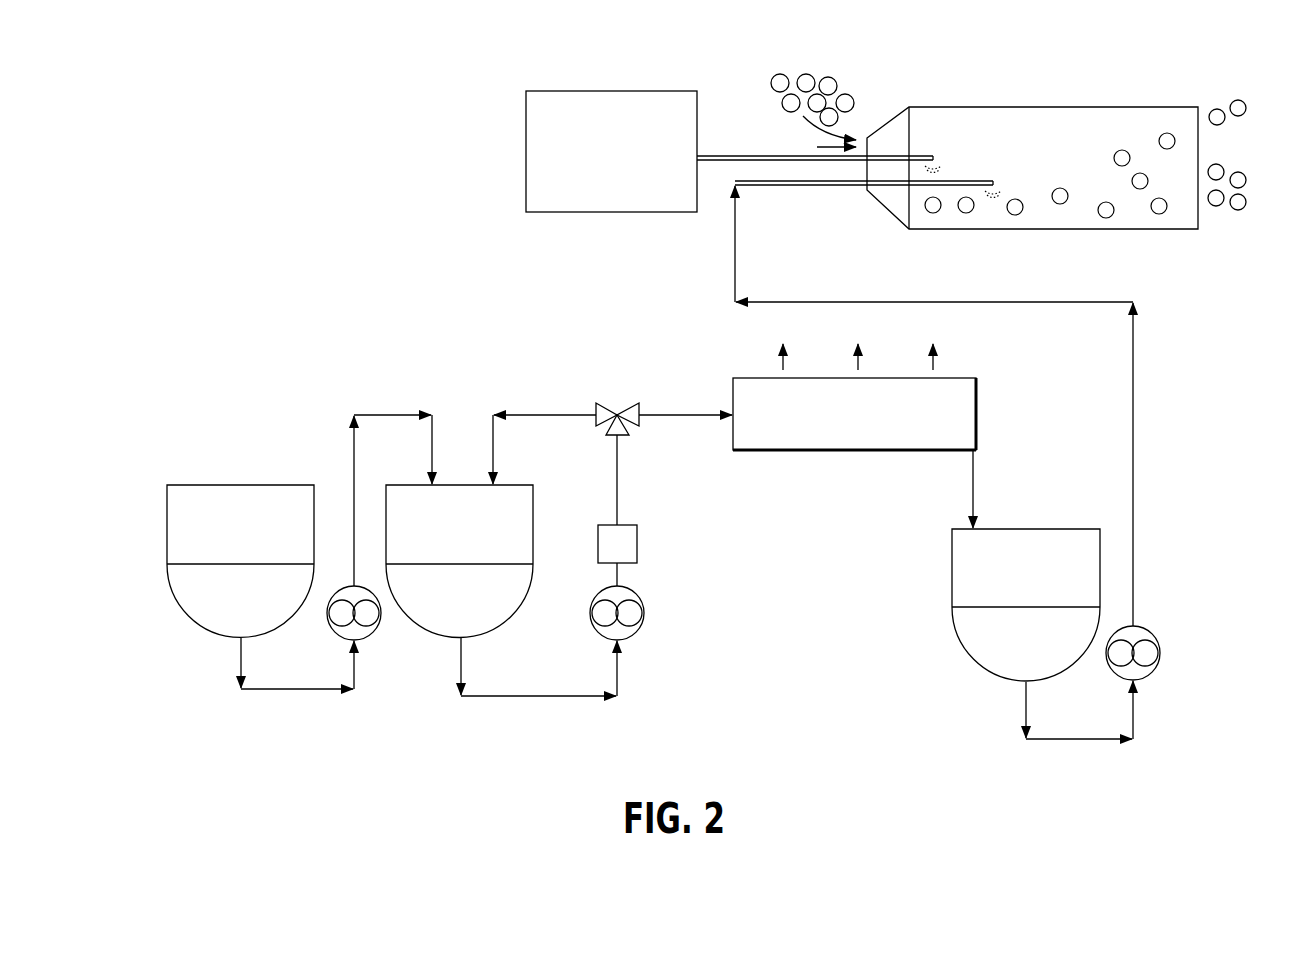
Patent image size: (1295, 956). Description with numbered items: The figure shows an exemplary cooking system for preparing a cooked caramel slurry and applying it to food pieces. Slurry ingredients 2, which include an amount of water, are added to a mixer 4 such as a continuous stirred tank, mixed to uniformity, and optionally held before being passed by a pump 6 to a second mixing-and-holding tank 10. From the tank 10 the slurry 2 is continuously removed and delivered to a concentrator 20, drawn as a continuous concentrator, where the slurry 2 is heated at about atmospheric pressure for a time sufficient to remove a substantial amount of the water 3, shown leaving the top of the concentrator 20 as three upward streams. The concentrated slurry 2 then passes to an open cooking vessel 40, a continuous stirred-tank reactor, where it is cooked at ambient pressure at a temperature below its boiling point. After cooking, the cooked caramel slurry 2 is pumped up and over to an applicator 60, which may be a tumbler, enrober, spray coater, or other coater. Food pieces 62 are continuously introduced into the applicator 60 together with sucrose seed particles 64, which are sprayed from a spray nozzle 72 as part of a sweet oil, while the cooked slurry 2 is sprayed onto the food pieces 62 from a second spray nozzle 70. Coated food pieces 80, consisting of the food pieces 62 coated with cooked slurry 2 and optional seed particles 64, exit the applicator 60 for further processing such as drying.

The slurry ingredients 2 is at (757, 202).
The water 3 is at (867, 359).
The mixer 4 is at (182, 649).
The pump 6 is at (374, 632).
The mixing-and-holding tank 10 is at (488, 604).
The concentrator 20 is at (762, 423).
The open cooking vessel 40 is at (1008, 585).
The applicator 60 is at (987, 128).
The food pieces 62 is at (843, 92).
The sucrose seed particles 64 is at (702, 140).
The spray nozzle 70 is at (1001, 179).
The spray nozzle 72 is at (937, 158).
The coated food pieces 80 is at (1207, 139).